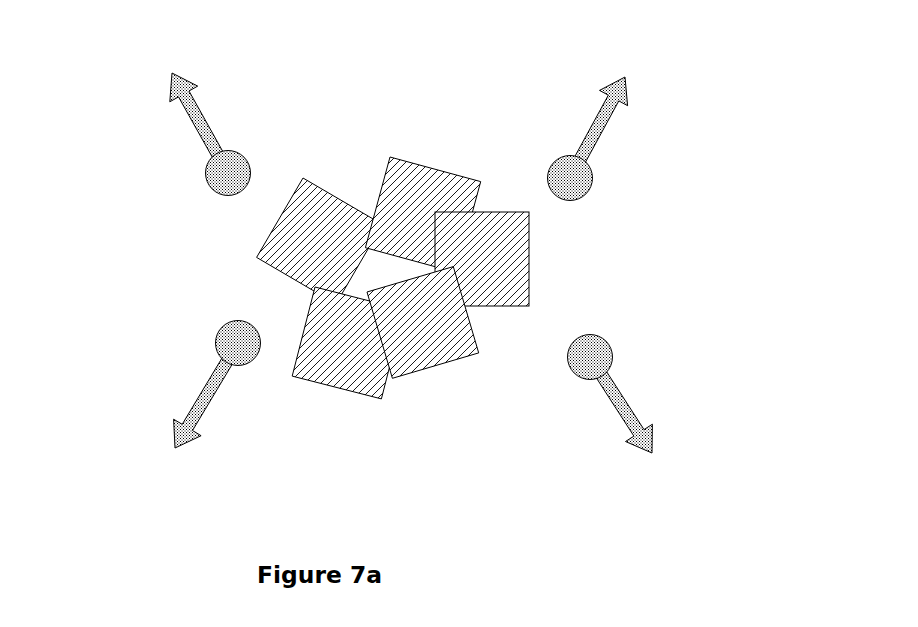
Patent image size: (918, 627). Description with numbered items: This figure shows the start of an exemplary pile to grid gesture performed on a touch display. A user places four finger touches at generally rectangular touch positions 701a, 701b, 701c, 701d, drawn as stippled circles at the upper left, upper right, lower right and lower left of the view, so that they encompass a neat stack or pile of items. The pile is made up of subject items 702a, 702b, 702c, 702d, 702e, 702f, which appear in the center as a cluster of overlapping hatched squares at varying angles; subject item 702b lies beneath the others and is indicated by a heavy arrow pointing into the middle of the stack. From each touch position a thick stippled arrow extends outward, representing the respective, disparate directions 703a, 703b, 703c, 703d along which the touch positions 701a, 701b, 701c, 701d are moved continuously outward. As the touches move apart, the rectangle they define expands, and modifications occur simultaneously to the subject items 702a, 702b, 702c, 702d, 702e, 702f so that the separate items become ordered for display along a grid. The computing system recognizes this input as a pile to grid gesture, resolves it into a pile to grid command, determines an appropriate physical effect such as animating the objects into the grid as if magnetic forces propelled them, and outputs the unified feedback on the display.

The touch position 701a is at (217, 193).
The touch position 701b is at (548, 167).
The touch position 701c is at (597, 333).
The touch position 701d is at (217, 338).
The subject item 702a is at (292, 195).
The subject item 702b is at (372, 262).
The subject item 702c is at (415, 163).
The subject item 702d is at (530, 255).
The subject item 702e is at (452, 365).
The subject item 702f is at (315, 383).
The direction 703a is at (195, 135).
The direction 703b is at (607, 128).
The direction 703c is at (622, 388).
The direction 703d is at (208, 378).